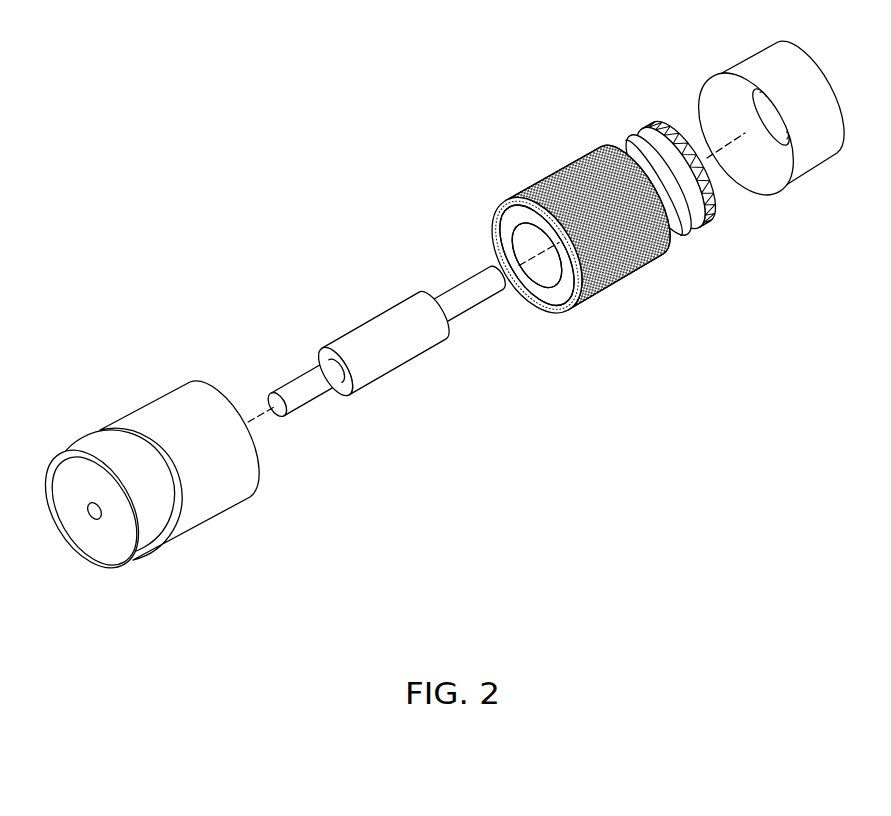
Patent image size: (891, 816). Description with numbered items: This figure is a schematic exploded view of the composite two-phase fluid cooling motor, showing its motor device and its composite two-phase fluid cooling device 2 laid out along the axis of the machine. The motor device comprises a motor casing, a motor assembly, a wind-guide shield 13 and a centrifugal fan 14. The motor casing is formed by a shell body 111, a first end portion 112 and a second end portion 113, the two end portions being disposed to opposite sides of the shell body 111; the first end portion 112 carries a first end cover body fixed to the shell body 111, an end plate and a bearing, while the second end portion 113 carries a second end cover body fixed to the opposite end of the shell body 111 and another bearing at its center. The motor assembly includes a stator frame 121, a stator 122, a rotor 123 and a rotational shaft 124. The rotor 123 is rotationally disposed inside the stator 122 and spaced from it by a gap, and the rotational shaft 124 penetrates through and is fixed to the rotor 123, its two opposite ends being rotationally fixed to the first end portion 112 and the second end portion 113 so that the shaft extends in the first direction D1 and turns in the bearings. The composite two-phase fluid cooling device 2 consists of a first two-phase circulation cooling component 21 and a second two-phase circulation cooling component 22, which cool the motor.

The composite two-phase fluid cooling device 2 is at (561, 230).
The wind-guide shield 13 is at (639, 147).
The centrifugal fan 14 is at (673, 120).
The first two-phase circulation cooling component 21 is at (490, 218).
The second two-phase circulation cooling component 22 is at (507, 193).
The shell body 111 is at (210, 502).
The first end portion 112 is at (152, 542).
The second end portion 113 is at (813, 160).
The stator frame 121 is at (560, 310).
The stator 122 is at (543, 290).
The rotor 123 is at (386, 298).
The rotational shaft 124 is at (302, 393).
The first direction D1 is at (812, 360).